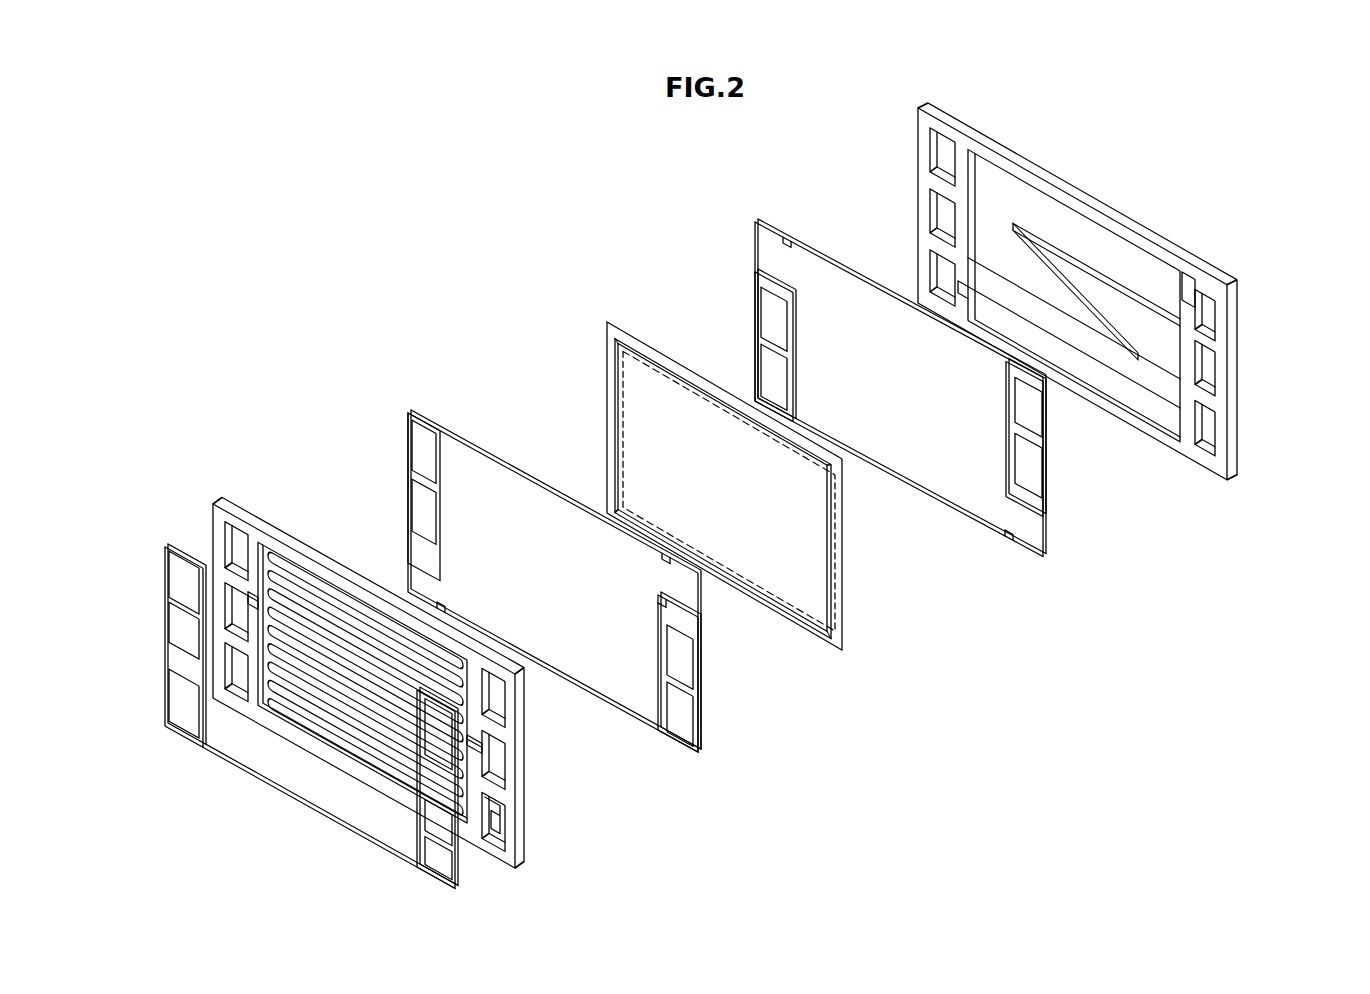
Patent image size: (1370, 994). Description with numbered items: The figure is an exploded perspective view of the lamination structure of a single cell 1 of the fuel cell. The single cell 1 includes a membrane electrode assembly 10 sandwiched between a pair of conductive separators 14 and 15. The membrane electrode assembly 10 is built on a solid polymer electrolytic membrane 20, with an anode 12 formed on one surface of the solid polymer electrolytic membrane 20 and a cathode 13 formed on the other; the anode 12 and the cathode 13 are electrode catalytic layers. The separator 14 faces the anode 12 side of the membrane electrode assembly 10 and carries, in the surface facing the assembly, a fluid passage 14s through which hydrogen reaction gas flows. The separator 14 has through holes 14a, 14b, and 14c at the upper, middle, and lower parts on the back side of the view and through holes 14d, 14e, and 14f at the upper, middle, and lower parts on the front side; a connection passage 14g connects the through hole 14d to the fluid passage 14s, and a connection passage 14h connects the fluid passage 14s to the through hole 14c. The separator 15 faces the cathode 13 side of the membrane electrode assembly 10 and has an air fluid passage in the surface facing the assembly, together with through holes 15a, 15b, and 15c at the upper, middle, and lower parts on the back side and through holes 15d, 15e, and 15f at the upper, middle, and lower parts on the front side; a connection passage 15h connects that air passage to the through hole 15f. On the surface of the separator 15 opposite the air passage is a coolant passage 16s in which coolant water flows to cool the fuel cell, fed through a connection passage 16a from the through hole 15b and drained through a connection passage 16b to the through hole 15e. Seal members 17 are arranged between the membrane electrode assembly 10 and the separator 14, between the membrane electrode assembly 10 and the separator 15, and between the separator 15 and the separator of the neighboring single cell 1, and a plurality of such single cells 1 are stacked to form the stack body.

The single cell 1 is at (377, 252).
The membrane electrode assembly 10 is at (877, 602).
The anode 12 is at (668, 356).
The cathode 13 is at (612, 350).
The separator 14 is at (1066, 167).
The through hole 14a is at (945, 150).
The through hole 14b is at (945, 212).
The through hole 14c is at (945, 272).
The through hole 14d is at (1210, 312).
The through hole 14e is at (1210, 372).
The through hole 14f is at (1210, 432).
The connection passage 14g is at (1195, 290).
The connection passage 14h is at (967, 290).
The fluid passage 14s is at (1100, 240).
The separator 15 is at (250, 498).
The through hole 15a is at (243, 548).
The through hole 15b is at (245, 605).
The through hole 15c is at (242, 664).
The through hole 15d is at (500, 700).
The through hole 15e is at (500, 772).
The through hole 15f is at (500, 808).
The connection passage 15h is at (497, 813).
The connection passage 16a is at (258, 618).
The connection passage 16b is at (480, 757).
The coolant passage 16s is at (345, 747).
The seal member 17 is at (247, 783).
The solid polymer electrolytic membrane 20 is at (803, 640).